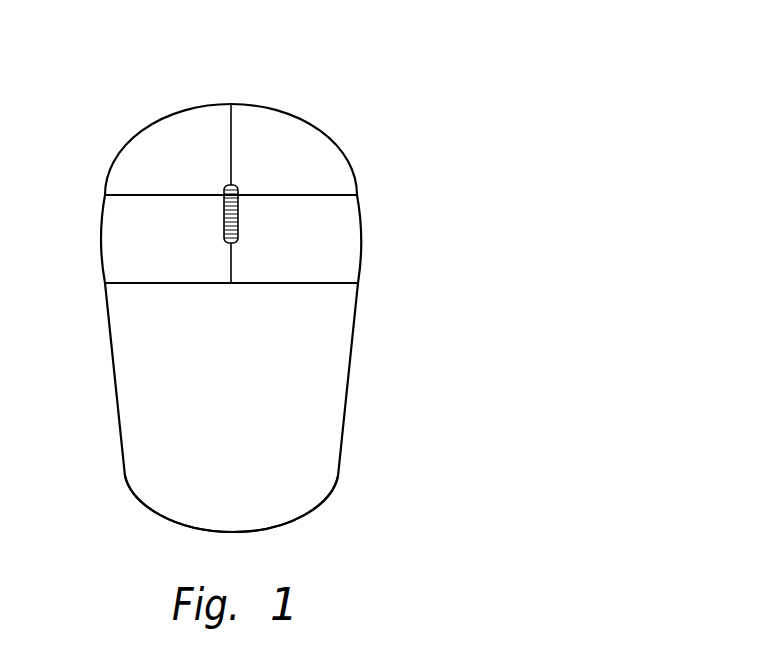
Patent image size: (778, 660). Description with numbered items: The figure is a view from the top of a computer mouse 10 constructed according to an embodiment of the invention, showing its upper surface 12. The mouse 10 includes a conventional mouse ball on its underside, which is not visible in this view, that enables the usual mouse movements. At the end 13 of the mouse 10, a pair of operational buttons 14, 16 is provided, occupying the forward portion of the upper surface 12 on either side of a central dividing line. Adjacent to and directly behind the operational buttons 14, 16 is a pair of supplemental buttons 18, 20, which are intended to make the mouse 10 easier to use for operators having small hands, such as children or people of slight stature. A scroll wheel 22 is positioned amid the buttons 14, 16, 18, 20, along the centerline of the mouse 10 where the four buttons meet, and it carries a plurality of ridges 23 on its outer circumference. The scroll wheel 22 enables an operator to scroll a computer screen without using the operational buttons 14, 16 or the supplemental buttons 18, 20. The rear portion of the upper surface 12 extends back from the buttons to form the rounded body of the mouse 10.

The computer mouse 10 is at (365, 73).
The upper surface 12 is at (333, 391).
The end 13 is at (258, 117).
The operational button 14 is at (150, 157).
The operational button 16 is at (315, 160).
The supplemental button 18 is at (120, 245).
The supplemental button 20 is at (348, 256).
The scroll wheel 22 is at (222, 223).
The ridges 23 is at (240, 208).